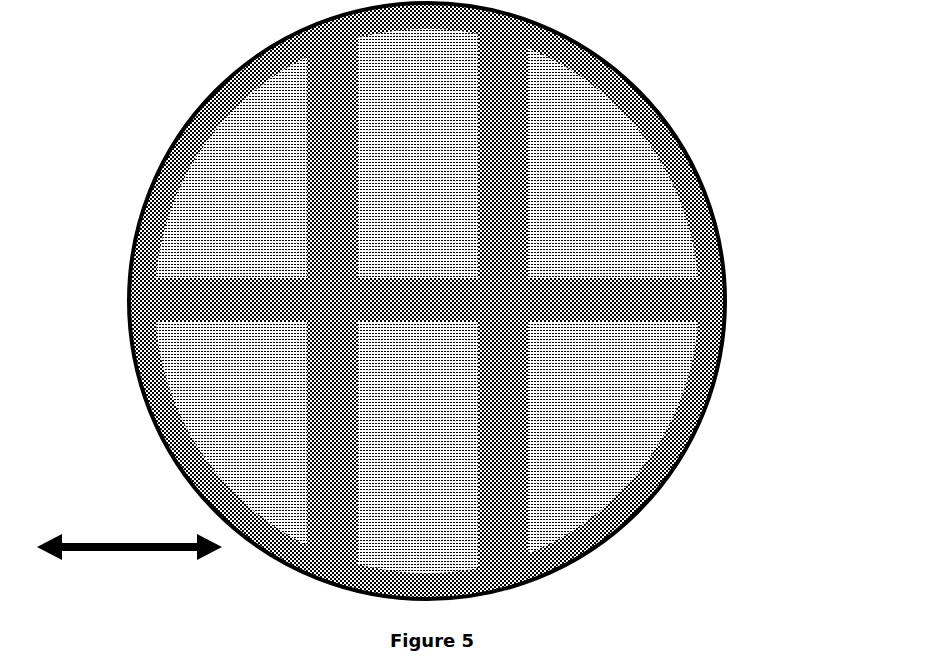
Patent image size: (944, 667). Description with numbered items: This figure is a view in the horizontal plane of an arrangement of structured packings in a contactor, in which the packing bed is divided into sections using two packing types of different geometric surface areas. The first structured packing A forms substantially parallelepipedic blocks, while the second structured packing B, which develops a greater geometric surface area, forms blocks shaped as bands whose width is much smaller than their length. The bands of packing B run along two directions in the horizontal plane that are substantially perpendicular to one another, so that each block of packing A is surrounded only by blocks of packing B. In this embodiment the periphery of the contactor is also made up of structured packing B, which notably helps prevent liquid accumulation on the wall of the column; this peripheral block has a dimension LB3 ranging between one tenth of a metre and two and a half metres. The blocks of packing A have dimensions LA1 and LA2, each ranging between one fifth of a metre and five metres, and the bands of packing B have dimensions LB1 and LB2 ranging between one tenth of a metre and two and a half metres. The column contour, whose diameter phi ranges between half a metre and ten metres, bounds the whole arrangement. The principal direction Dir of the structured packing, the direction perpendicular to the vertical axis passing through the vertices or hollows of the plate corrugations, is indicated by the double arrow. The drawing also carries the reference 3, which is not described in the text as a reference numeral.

The substrate / wafer 3 is at (482, 301).
The first structured packing A is at (643, 166).
The second structured packing B is at (445, 301).
The dimension of the block of packing A LA1 is at (464, 183).
The dimension of the block of packing A LA2 is at (402, 556).
The dimension of the band of packing B LB1 is at (349, 447).
The dimension of the band of packing B LB2 is at (252, 284).
The dimension of the peripheral block LB3 is at (209, 479).
The principal direction Dir is at (129, 528).
The diameter of column phi is at (188, 60).